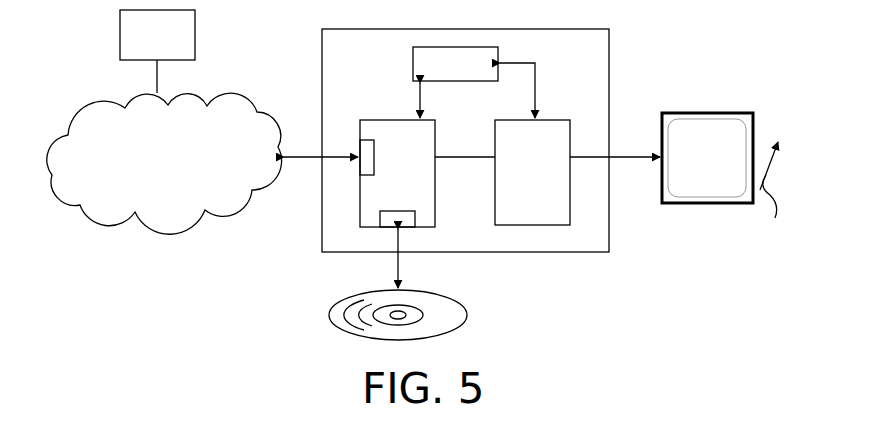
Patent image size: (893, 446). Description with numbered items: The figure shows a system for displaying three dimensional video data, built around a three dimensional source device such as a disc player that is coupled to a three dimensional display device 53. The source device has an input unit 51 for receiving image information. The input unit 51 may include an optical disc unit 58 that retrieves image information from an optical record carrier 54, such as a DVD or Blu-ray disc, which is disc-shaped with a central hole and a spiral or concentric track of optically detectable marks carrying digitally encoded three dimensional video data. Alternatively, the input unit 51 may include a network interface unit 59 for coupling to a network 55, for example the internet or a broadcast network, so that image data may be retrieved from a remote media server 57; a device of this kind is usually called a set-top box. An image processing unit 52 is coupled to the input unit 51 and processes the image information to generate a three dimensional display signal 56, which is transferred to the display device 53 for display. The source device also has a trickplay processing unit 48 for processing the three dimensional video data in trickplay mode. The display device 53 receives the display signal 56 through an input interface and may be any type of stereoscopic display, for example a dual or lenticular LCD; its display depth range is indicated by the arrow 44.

The arrow indicating display depth range 44 is at (774, 194).
The trickplay processing unit 48 is at (442, 75).
The input unit 51 is at (384, 190).
The image processing unit 52 is at (519, 188).
The 3D display device 53 is at (694, 170).
The optical record carrier 54 is at (468, 313).
The network 55 is at (152, 172).
The 3D display signal 56 is at (628, 154).
The remote media server 57 is at (157, 51).
The optical disc unit 58 is at (366, 217).
The network interface unit 59 is at (367, 140).